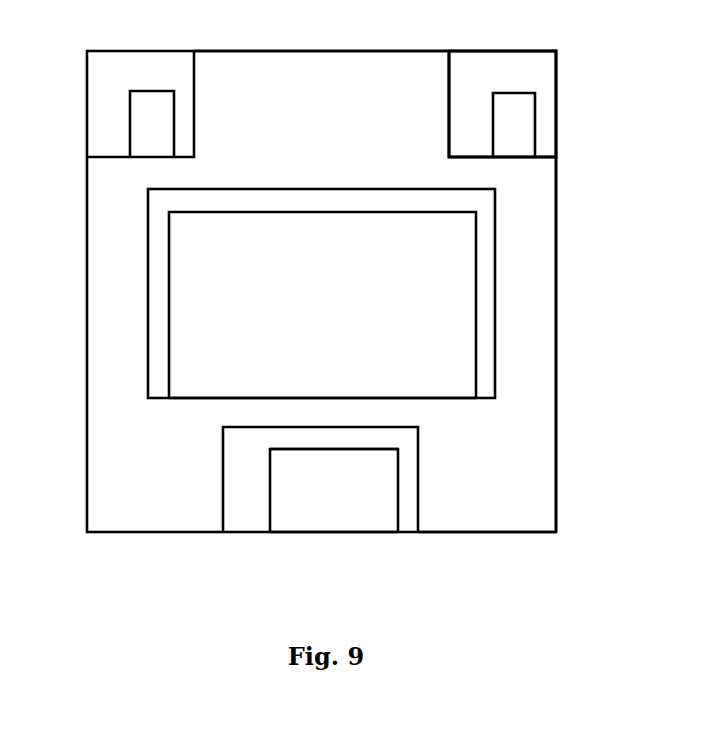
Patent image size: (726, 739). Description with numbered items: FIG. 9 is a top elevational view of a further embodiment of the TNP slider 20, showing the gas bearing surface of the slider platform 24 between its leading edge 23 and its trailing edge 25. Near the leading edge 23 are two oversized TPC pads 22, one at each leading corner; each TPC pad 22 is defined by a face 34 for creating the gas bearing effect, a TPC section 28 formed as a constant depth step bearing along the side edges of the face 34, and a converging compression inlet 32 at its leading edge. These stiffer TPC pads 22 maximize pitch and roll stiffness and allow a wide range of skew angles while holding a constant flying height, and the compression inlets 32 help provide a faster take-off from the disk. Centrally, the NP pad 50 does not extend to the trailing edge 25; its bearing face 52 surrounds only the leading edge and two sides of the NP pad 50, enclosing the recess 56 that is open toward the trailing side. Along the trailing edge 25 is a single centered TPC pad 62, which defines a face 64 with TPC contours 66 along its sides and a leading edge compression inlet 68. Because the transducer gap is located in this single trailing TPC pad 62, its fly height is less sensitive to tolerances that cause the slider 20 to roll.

The TNP slider 20 is at (22, 301).
The TPC pad 22 is at (87, 95).
The leading edge 23 is at (316, 51).
The slider platform 24 is at (556, 370).
The trailing edge 25 is at (452, 532).
The TPC section 28 is at (549, 145).
The compression inlet 32 is at (513, 65).
The face 34 is at (520, 118).
The NP pad 50 is at (495, 268).
The bearing face 52 is at (483, 310).
The recess 56 is at (425, 380).
The TPC pad 62 is at (355, 532).
The face 64 is at (298, 515).
The TPC contours 66 is at (247, 515).
The leading edge compression inlet 68 is at (325, 438).